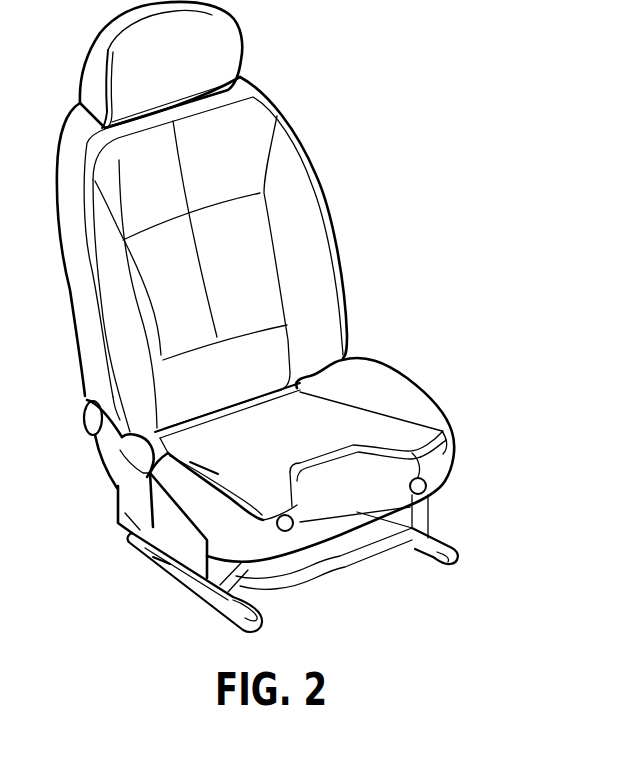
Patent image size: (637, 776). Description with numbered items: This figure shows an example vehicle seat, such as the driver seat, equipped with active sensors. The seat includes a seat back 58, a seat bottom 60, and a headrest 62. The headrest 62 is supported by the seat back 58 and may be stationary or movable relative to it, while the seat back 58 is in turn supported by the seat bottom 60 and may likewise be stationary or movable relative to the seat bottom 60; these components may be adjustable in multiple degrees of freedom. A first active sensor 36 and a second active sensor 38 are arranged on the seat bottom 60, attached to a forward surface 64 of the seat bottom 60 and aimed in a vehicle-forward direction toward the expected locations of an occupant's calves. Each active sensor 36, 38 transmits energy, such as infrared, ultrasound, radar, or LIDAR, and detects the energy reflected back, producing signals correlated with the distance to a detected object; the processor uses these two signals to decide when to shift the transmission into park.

The first active sensor 36 is at (293, 522).
The second active sensor 38 is at (426, 484).
The seat back 58 is at (334, 222).
The seat bottom 60 is at (405, 377).
The headrest 62 is at (241, 38).
The forward surface 64 is at (363, 534).